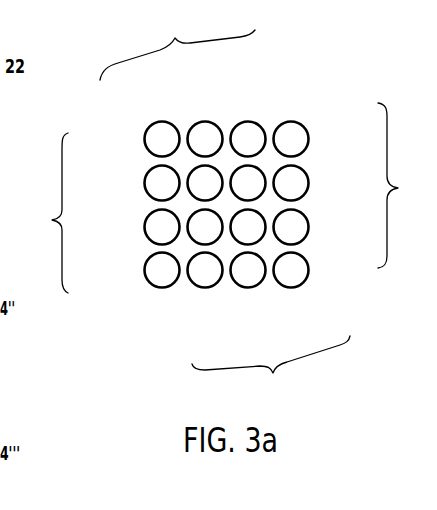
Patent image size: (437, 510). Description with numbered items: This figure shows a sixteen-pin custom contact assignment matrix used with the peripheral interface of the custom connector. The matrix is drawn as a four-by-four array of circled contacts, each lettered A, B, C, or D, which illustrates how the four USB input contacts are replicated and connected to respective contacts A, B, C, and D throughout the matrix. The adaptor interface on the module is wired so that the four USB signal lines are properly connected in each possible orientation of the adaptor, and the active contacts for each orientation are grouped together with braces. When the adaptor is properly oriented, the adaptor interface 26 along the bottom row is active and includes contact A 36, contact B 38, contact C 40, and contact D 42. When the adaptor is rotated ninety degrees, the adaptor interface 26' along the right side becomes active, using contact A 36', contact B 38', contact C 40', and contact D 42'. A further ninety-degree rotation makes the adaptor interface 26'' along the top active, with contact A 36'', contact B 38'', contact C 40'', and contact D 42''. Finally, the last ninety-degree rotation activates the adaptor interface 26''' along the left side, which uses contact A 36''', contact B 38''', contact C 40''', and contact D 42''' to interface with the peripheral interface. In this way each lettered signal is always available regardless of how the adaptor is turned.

The adaptor interface 26 is at (271, 369).
The adaptor interface 26' is at (403, 185).
The adaptor interface 26'' is at (177, 45).
The adaptor interface 26''' is at (40, 213).
The contact A 36 is at (178, 308).
The contact B 38 is at (220, 306).
The contact C 40 is at (263, 300).
The contact D 42 is at (287, 274).
The contact A 36' is at (325, 266).
The contact B 38' is at (325, 222).
The contact C 40' is at (325, 178).
The contact D 42' is at (304, 157).
The contact A 36'' is at (272, 99).
The contact B 38'' is at (230, 104).
The contact C 40'' is at (186, 110).
The contact D 42'' is at (165, 139).
The contact A 36''' is at (126, 142).
The contact B 38''' is at (126, 186).
The contact C 40''' is at (126, 231).
The contact D 42''' is at (147, 253).